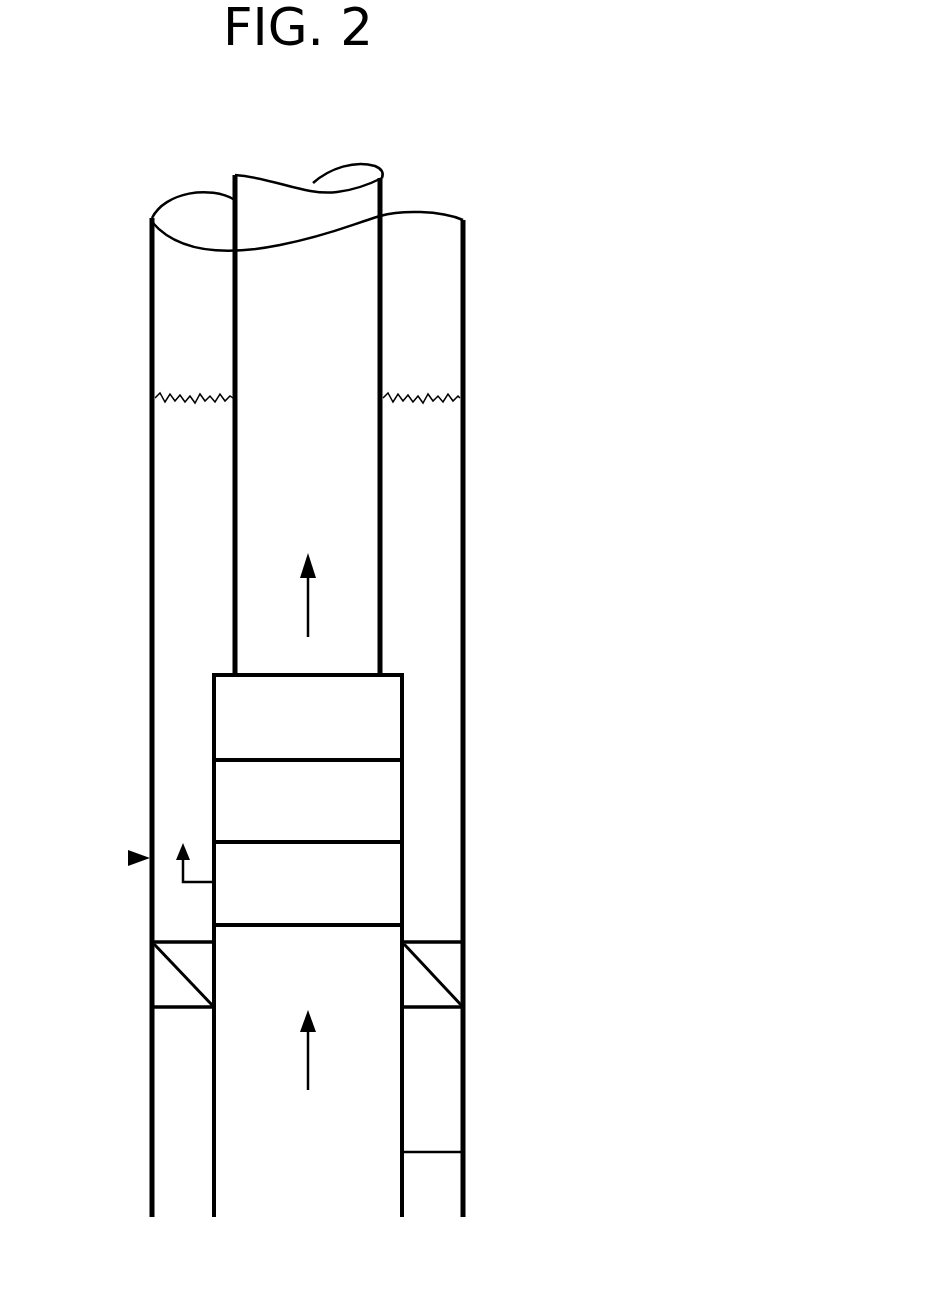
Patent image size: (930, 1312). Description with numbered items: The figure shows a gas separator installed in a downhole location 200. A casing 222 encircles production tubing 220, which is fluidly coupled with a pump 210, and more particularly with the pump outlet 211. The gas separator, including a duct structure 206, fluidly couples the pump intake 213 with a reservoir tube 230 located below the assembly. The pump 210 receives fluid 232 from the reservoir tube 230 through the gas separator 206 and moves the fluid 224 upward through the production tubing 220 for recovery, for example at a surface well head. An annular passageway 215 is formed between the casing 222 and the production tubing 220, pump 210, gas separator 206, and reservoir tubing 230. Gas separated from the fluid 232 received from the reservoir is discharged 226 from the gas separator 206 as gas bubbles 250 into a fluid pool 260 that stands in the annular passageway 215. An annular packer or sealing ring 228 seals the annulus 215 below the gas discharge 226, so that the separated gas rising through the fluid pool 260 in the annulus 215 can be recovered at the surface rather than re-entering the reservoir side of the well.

The downhole location 200 is at (437, 112).
The production tubing 220 is at (383, 184).
The casing 222 is at (465, 258).
The fluid pool 260 is at (437, 392).
The fluid 224 is at (308, 594).
The pump outlet 211 is at (391, 677).
The pump 210 is at (405, 700).
The pump intake 213 is at (368, 838).
The gas separator 206 is at (405, 872).
The annular passageway 215 is at (183, 728).
The gas bubbles 250 is at (128, 858).
The gas discharge 226 is at (193, 890).
The annular packer 228 is at (445, 967).
The fluid received from reservoir 232 is at (308, 1050).
The reservoir tube 230 is at (463, 1151).